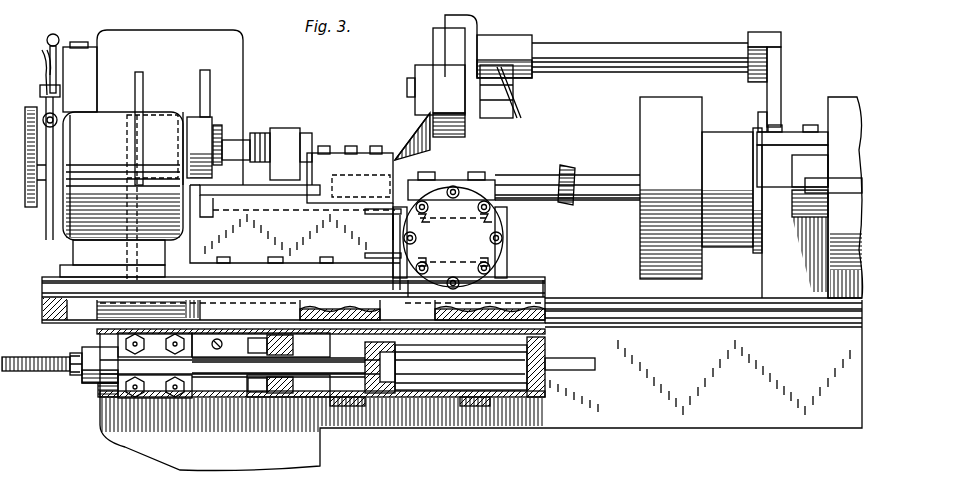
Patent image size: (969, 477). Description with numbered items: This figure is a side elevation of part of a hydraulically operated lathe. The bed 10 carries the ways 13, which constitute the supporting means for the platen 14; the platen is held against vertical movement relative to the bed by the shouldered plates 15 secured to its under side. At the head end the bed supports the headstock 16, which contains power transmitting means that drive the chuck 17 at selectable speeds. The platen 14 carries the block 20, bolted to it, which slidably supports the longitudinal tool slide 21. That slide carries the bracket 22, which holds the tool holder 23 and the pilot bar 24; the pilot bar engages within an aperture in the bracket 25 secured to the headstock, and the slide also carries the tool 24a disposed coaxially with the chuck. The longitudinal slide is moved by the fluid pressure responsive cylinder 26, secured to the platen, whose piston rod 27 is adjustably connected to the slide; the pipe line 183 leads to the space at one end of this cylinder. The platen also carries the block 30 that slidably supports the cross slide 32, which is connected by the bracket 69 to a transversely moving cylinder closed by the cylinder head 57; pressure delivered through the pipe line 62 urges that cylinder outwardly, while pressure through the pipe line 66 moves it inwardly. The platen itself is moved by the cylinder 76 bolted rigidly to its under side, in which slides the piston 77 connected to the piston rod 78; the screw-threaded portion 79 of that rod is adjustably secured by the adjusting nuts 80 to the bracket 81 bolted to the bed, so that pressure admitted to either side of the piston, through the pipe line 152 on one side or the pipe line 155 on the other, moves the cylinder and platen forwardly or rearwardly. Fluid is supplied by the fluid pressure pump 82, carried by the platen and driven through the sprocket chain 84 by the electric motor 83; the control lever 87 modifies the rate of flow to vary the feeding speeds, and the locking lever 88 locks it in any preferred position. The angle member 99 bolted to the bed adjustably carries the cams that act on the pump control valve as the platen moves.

The bed 10 is at (692, 410).
The ways 13 is at (618, 303).
The platen 14 is at (545, 288).
The shouldered plates 15 is at (270, 300).
The headstock 16 is at (840, 110).
The chuck 17 is at (650, 118).
The block 20 is at (235, 200).
The longitudinal tool slide 21 is at (310, 153).
The bracket 22 is at (430, 100).
The tool holder 23 is at (500, 112).
The pilot bar 24 is at (570, 50).
The tool 24a is at (575, 172).
The bracket 25 is at (781, 55).
The fluid pressure responsive cylinder 26 is at (192, 117).
The piston rod 27 is at (254, 133).
The block 30 is at (500, 260).
The cross slide 32 is at (507, 218).
The cylinder head 57 is at (488, 245).
The pipe line 62 is at (378, 253).
The pipe line 66 is at (378, 209).
The bracket 69 is at (458, 180).
The cylinder 76 is at (435, 390).
The piston 77 is at (380, 378).
The piston rod 78 is at (222, 365).
The screw-threaded portion 79 is at (72, 373).
The adjusting nuts 80 is at (110, 394).
The bracket 81 is at (100, 355).
The fluid pressure pump 82 is at (243, 60).
The electric motor 83 is at (108, 130).
The sprocket chain 84 is at (32, 107).
The control lever 87 is at (57, 35).
The locking lever 88 is at (43, 52).
The angle member 99 is at (50, 371).
The pipe line 152 is at (565, 365).
The pipe line 155 is at (218, 60).
The pipe line 183 is at (139, 72).